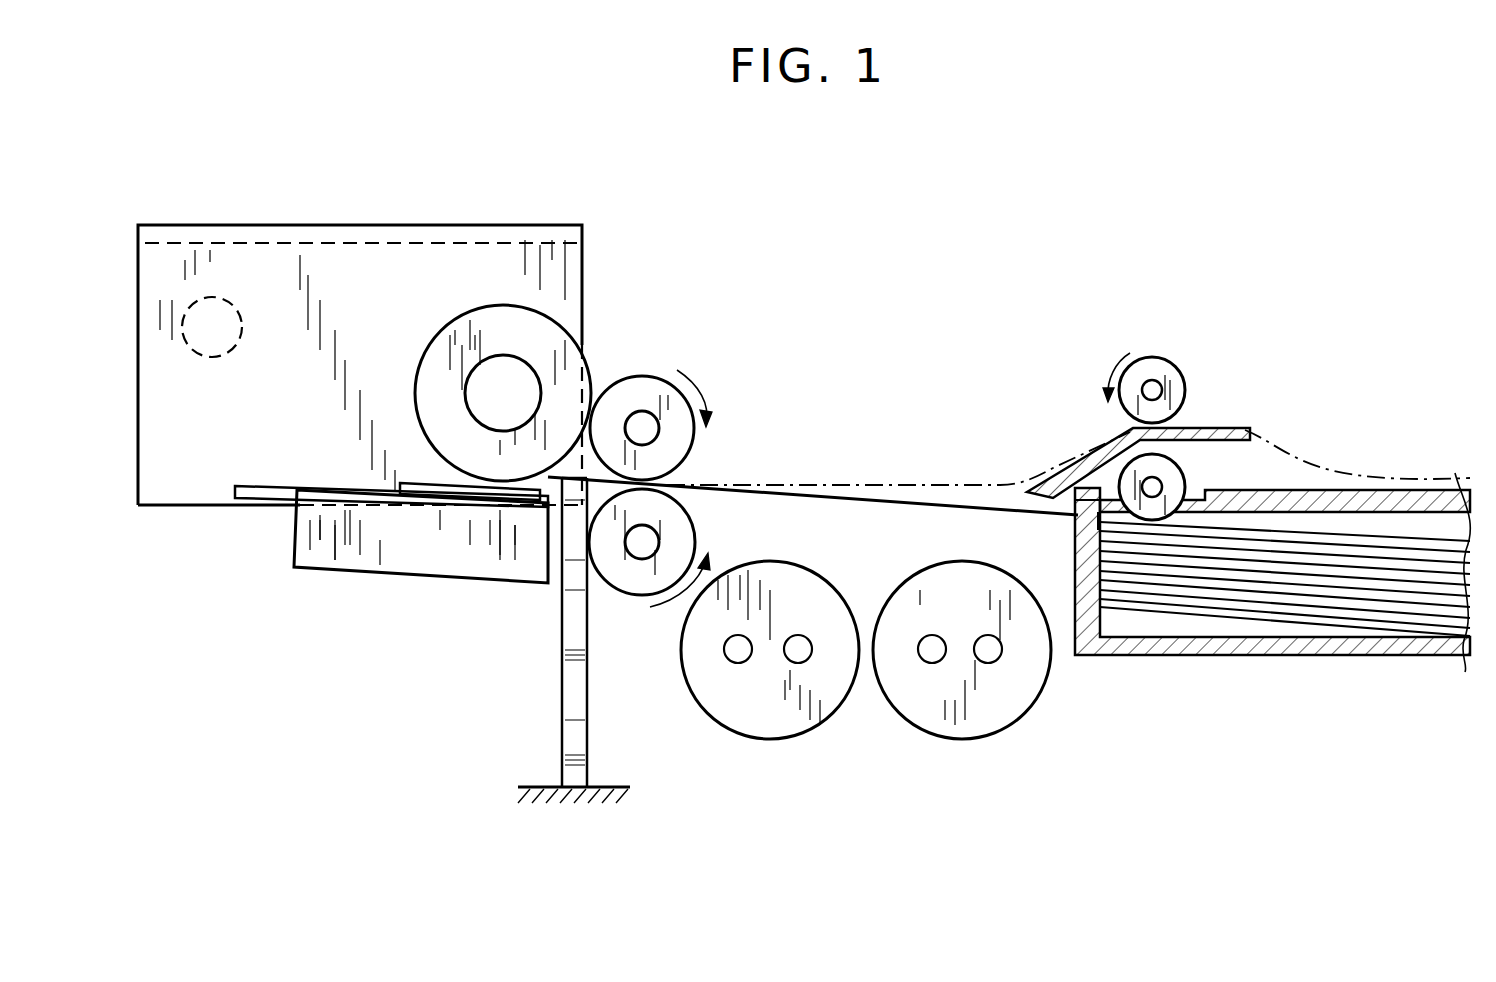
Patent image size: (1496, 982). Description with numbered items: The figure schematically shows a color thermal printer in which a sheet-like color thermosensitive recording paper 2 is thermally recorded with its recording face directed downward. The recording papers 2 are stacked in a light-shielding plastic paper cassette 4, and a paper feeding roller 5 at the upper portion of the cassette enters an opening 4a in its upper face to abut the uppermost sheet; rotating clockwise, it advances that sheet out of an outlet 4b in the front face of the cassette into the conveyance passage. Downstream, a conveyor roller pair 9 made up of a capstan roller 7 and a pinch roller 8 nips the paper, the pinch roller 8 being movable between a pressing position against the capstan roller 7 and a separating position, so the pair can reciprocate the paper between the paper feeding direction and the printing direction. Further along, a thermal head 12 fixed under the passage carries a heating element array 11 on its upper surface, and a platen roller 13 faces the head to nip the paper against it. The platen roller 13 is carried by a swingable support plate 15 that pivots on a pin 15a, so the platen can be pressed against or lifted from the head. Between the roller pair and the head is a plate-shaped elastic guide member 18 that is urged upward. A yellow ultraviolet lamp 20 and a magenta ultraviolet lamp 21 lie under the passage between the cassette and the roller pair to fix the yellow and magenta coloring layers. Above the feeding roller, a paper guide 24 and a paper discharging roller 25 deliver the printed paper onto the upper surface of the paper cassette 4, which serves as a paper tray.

The support plate 15 is at (276, 226).
The pin 15a is at (212, 357).
The platen roller 13 is at (503, 305).
The conveyor roller pair 9 is at (714, 466).
The capstan roller 7 is at (650, 368).
The pinch roller 8 is at (683, 520).
The heating element array 11 is at (490, 498).
The thermal head 12 is at (338, 572).
The guide member 18 is at (562, 681).
The yellow ultraviolet lamp 20 is at (762, 730).
The magenta ultraviolet lamp 21 is at (960, 730).
The color thermosensitive recording paper 2 is at (869, 497).
The paper cassette 4 is at (1325, 657).
The opening 4a is at (1198, 490).
The outlet 4b is at (1075, 520).
The paper guide 24 is at (1247, 425).
The paper feeding roller 5 is at (1163, 467).
The paper discharging roller 25 is at (1153, 357).